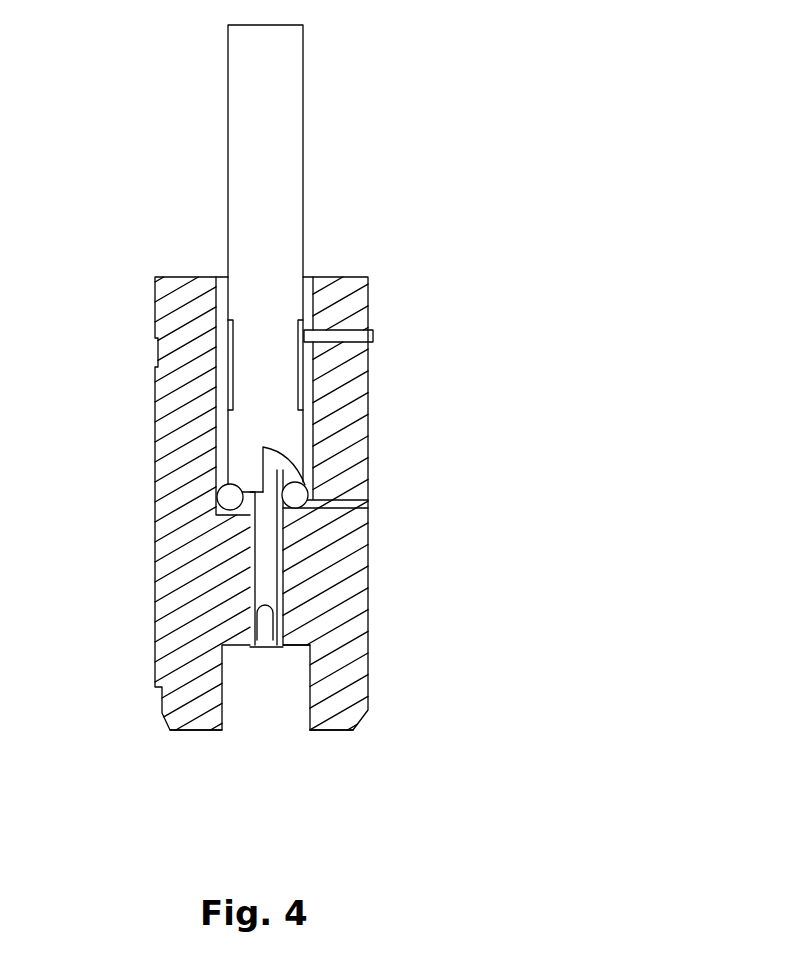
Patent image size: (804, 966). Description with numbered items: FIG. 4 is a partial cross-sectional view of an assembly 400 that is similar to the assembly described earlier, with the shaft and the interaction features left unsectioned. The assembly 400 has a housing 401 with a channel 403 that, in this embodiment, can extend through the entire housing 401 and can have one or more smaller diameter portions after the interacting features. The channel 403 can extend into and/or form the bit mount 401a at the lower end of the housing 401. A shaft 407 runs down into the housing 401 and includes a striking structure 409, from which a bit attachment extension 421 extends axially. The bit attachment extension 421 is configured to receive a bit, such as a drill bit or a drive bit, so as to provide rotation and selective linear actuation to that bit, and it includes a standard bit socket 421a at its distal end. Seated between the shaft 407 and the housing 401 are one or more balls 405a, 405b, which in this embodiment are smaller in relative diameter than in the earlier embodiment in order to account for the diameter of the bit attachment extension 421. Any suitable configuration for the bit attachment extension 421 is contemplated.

The assembly 400 is at (259, 427).
The housing 401 is at (301, 549).
The bit mount 401a is at (278, 710).
The channel 403 is at (288, 641).
The ball 405a is at (292, 494).
The ball 405b is at (222, 499).
The shaft 407 is at (245, 188).
The striking structure 409 is at (250, 474).
The bit attachment extension 421 is at (170, 650).
The standard bit socket 421a is at (274, 622).